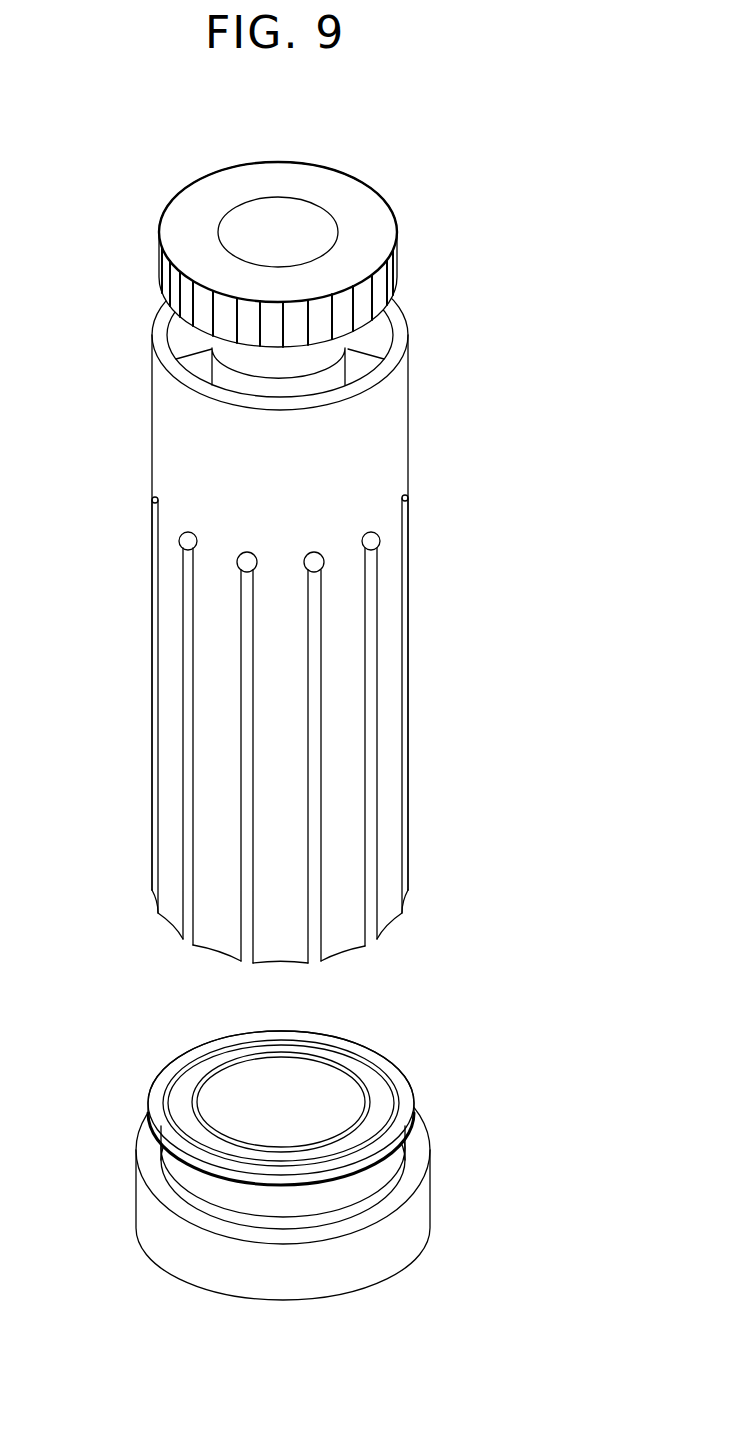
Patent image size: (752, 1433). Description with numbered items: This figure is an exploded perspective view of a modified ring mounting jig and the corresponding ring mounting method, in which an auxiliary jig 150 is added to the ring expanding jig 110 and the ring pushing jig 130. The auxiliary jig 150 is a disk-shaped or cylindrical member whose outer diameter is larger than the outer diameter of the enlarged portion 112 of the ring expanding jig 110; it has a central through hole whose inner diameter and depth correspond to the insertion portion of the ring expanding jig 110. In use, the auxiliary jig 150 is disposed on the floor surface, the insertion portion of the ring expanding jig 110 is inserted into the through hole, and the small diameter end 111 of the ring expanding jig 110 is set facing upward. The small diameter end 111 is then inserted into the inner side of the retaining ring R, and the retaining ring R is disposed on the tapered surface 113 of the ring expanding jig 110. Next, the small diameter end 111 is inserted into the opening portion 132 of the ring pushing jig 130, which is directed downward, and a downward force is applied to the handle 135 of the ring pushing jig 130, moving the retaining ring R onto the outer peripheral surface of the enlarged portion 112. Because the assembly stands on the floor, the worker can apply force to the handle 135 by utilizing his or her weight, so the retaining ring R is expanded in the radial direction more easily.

The handle 135 is at (351, 205).
The ring pushing jig 130 is at (459, 360).
The opening portion 132 is at (230, 972).
The retaining ring R is at (383, 1060).
The small diameter end 111 is at (404, 1113).
The ring expanding jig 110 is at (300, 1220).
The enlarged portion 112 is at (329, 1219).
The tapered surface 113 is at (357, 1184).
The auxiliary jig 150 is at (434, 1187).